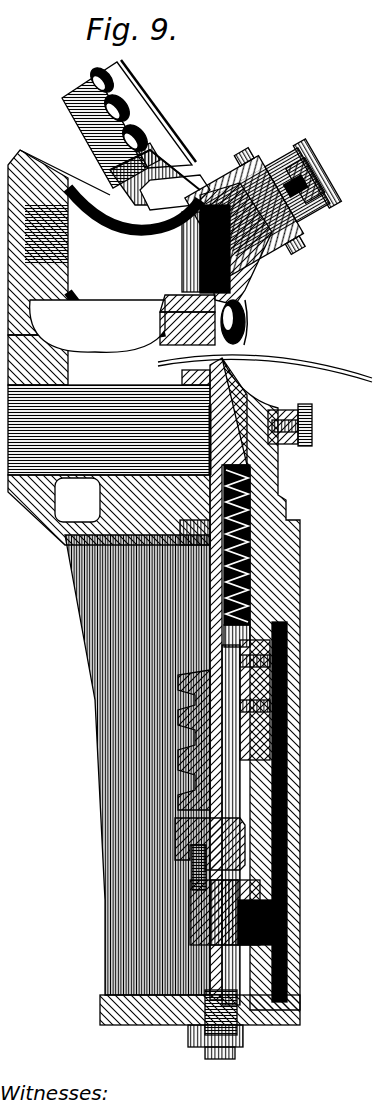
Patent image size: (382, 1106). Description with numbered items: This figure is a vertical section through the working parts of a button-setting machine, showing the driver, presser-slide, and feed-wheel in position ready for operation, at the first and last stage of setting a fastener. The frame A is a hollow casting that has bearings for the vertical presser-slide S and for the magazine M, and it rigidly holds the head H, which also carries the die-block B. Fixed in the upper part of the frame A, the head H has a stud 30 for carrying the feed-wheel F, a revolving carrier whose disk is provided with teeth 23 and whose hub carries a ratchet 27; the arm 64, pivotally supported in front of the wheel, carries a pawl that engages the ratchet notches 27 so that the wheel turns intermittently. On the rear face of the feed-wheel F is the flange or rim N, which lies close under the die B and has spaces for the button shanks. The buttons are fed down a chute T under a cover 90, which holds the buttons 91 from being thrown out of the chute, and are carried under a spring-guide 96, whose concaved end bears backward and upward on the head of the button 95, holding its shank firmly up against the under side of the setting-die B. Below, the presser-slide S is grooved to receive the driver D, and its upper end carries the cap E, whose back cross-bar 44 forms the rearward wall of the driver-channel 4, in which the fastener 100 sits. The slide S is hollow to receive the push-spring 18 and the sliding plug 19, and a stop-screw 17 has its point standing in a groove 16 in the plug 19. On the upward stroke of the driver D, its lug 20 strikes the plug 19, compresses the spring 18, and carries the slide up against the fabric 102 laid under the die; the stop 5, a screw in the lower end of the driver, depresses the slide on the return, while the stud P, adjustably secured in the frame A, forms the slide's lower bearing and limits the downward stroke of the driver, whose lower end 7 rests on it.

The button 91 is at (112, 72).
The cover 90 is at (122, 120).
The teeth 23 is at (152, 155).
The stud 30 is at (235, 200).
The ratchet 27 is at (247, 148).
The arm 64 is at (272, 168).
The tube T is at (97, 131).
The flange or guide N is at (110, 185).
The head H is at (148, 1037).
The feed-wheel F is at (245, 262).
The button 95 is at (248, 318).
The spring-guide 96 is at (247, 338).
The die-block B is at (160, 323).
The magazine M is at (88, 400).
The back cross-bar 44 is at (182, 378).
The driver-channel 4 is at (232, 380).
The fabric 102 is at (266, 368).
The cap E is at (282, 440).
The fastener 100 is at (205, 455).
The presser-slide S is at (278, 508).
The frame A is at (45, 508).
The push-spring 18 is at (250, 560).
The driver D is at (252, 602).
The stop-screw 17 is at (288, 668).
The sliding plug 19 is at (270, 712).
The groove 16 is at (245, 736).
The rack teeth 7 is at (180, 760).
The lug 20 is at (245, 832).
The stop 5 is at (192, 882).
The stud P is at (232, 1050).